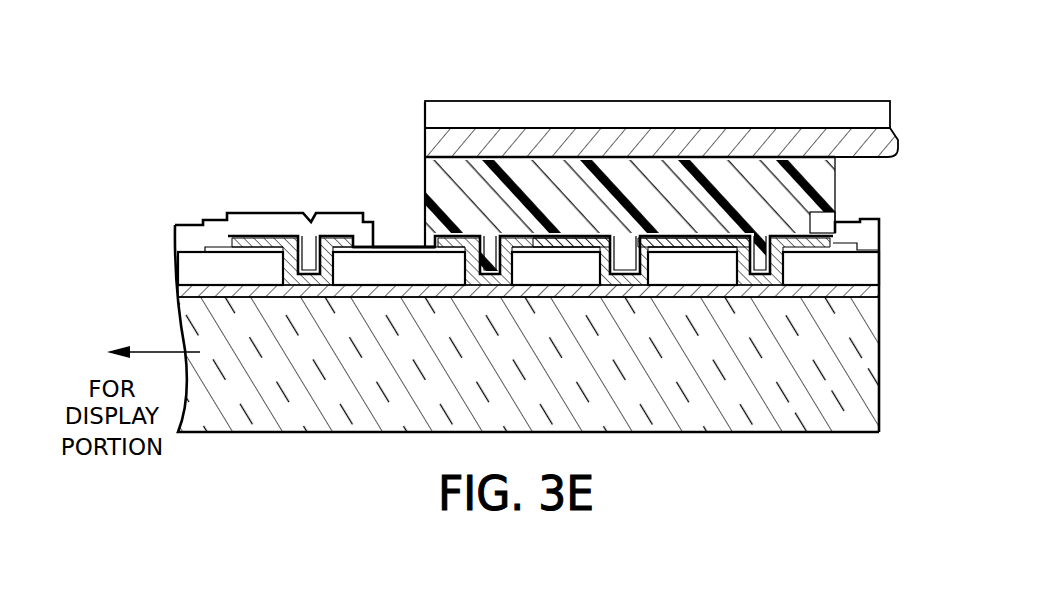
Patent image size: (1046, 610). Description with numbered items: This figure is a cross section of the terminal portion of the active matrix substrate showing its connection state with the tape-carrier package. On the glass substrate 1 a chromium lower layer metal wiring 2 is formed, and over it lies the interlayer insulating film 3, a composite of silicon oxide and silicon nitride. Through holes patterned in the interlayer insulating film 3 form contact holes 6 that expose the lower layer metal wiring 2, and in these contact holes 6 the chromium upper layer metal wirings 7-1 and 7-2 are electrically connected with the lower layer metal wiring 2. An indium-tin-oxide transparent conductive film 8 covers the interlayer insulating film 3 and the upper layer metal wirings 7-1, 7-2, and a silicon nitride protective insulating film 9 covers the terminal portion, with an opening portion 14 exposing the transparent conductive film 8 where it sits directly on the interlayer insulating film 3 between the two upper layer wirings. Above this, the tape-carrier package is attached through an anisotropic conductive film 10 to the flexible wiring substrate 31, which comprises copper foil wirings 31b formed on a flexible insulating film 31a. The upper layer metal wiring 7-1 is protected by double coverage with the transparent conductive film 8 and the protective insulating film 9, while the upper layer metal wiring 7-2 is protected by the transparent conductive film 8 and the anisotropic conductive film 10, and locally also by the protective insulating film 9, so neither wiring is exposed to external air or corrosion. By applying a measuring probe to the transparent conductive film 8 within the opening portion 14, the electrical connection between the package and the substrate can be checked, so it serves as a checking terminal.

The glass substrate 1 is at (782, 415).
The lower layer metal wiring 2 is at (883, 291).
The interlayer insulating film 3 is at (867, 266).
The contact holes 6 is at (308, 255).
The upper layer metal wiring 7-1 is at (338, 247).
The upper layer metal wiring 7-2 is at (837, 222).
The transparent conductive film 8 is at (392, 245).
The protective insulating film 9 is at (258, 225).
The anisotropic conductive film 10 is at (617, 187).
The opening portion 14 is at (413, 213).
The flexible wiring substrate 31 is at (661, 100).
The flexible insulating film 31a is at (558, 112).
The copper foil wirings 31b is at (778, 140).